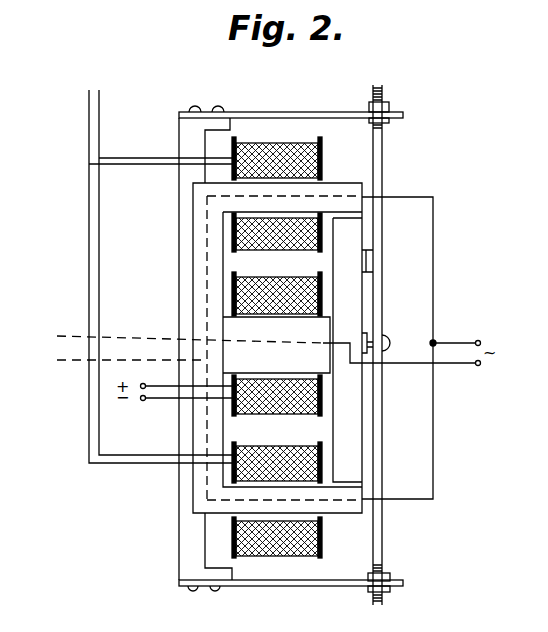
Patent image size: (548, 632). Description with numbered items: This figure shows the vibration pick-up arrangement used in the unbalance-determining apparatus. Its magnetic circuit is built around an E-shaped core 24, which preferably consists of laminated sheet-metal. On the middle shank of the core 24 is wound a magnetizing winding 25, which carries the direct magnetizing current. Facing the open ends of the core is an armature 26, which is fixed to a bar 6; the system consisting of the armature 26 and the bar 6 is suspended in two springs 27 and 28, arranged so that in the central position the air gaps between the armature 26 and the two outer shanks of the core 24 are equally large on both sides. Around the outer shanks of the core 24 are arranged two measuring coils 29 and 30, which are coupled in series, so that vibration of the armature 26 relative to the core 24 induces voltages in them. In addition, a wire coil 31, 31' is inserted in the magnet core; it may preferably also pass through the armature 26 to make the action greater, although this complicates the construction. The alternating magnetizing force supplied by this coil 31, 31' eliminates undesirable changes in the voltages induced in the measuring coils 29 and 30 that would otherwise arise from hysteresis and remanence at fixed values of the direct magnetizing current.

The bar 6 is at (384, 97).
The E-shaped core 24 is at (220, 328).
The magnetizing winding 25 is at (232, 283).
The armature 26 is at (355, 292).
The spring 27 is at (273, 112).
The spring 28 is at (258, 587).
The measuring coil 29 is at (237, 535).
The measuring coil 30 is at (232, 227).
The wire coil 31 is at (113, 363).
The wire coil 31' is at (172, 335).